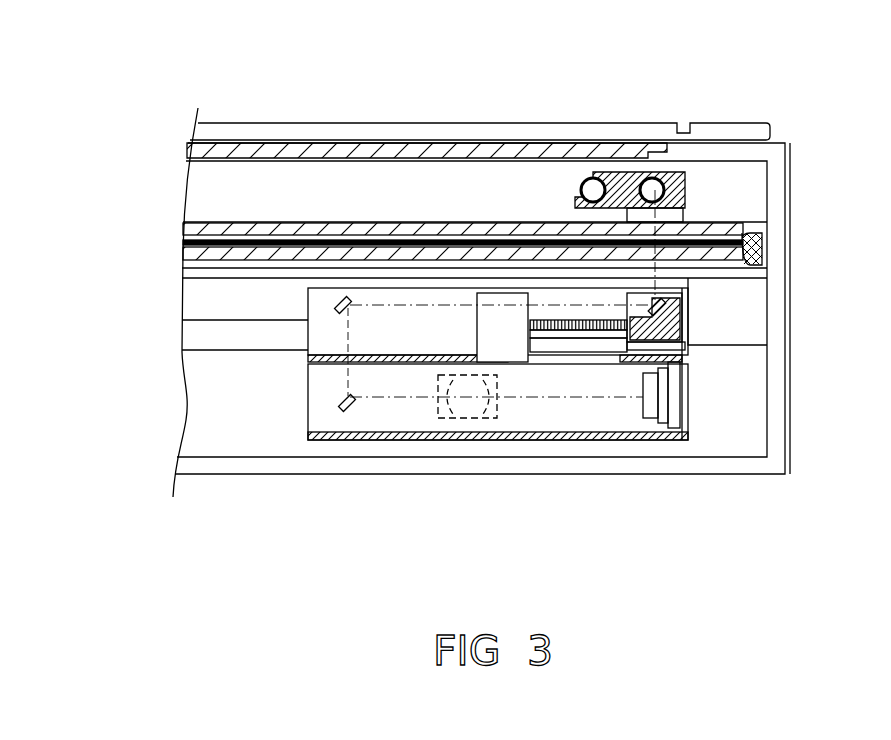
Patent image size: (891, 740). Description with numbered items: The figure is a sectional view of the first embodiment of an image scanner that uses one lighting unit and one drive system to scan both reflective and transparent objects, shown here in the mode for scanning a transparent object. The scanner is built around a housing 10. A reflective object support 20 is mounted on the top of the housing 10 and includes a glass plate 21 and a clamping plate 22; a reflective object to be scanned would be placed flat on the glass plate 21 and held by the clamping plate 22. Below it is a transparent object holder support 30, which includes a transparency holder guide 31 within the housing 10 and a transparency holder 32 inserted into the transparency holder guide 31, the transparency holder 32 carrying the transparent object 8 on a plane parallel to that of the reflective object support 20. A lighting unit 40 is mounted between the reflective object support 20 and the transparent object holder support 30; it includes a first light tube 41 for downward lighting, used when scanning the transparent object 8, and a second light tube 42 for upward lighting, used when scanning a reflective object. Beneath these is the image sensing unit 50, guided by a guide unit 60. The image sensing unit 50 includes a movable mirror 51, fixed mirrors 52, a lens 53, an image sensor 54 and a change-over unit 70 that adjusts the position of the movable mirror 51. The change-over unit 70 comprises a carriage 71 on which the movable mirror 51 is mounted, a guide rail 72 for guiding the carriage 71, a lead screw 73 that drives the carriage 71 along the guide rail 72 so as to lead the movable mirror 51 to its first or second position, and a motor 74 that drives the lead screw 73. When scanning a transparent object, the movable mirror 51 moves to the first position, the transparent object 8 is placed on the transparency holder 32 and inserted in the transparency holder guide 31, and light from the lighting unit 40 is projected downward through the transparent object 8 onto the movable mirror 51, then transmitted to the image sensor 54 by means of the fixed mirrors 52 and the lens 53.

The transparent object 8 is at (427, 240).
The housing 10 is at (778, 193).
The reflective object support 20 is at (425, 97).
The glass plate 21 is at (475, 147).
The clamping plate 22 is at (412, 132).
The transparent object holder support 30 is at (404, 259).
The transparency holder guide 31 is at (377, 227).
The transparency holder 32 is at (187, 262).
The lighting unit 40 is at (627, 188).
The first light tube 41 is at (637, 173).
The second light tube 42 is at (580, 189).
The image sensing unit 50 is at (505, 417).
The movable mirror 51 is at (700, 335).
The fixed mirrors 52 is at (335, 303).
The lens 53 is at (462, 413).
The image sensor 54 is at (662, 398).
The guide unit 60 is at (753, 327).
The change-over unit 70 is at (588, 418).
The carriage 71 is at (672, 327).
The guide rail 72 is at (598, 349).
The lead screw 73 is at (568, 331).
The motor 74 is at (495, 332).